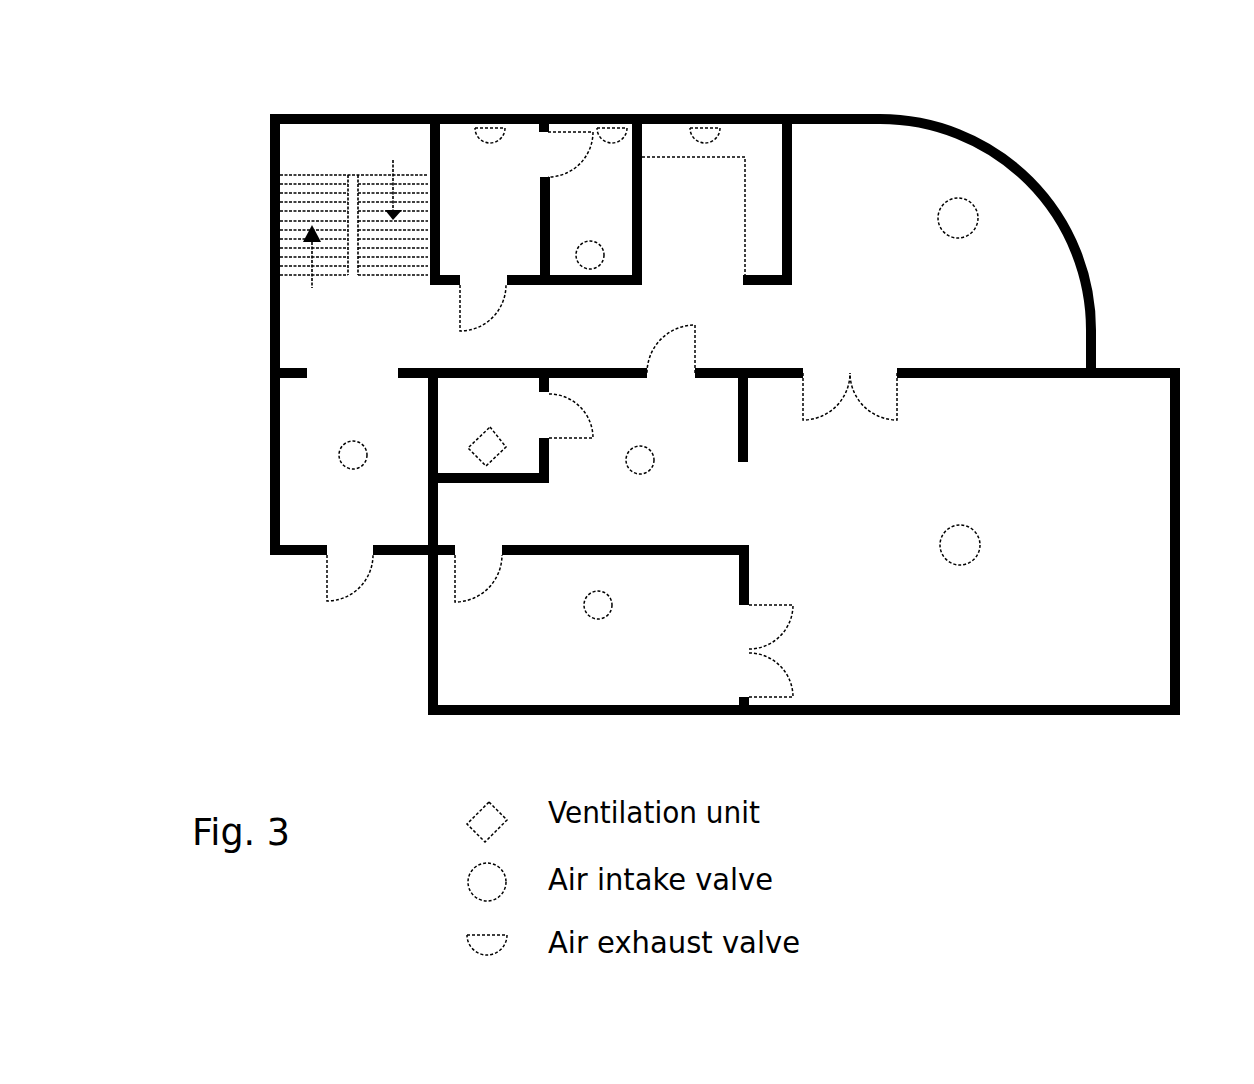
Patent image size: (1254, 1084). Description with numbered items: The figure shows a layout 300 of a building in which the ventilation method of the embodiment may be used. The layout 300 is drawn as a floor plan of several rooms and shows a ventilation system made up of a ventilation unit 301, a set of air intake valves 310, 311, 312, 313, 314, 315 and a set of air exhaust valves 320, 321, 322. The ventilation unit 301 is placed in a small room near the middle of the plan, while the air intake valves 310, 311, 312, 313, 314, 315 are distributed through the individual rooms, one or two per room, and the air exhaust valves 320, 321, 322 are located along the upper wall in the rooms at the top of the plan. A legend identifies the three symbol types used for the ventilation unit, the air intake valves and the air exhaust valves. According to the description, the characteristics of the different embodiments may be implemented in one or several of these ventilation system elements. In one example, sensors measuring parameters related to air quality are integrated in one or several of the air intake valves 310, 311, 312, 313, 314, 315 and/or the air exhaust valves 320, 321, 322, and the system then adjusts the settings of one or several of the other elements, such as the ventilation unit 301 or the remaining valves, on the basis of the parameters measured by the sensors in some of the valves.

The layout 300 is at (1150, 268).
The ventilation unit 301 is at (475, 463).
The air intake valve 310 is at (938, 218).
The air intake valve 311 is at (940, 547).
The air intake valve 312 is at (590, 270).
The air intake valve 313 is at (627, 468).
The air intake valve 314 is at (585, 618).
The air intake valve 315 is at (338, 461).
The air exhaust valve 320 is at (483, 128).
The air exhaust valve 321 is at (593, 128).
The air exhaust valve 322 is at (703, 128).